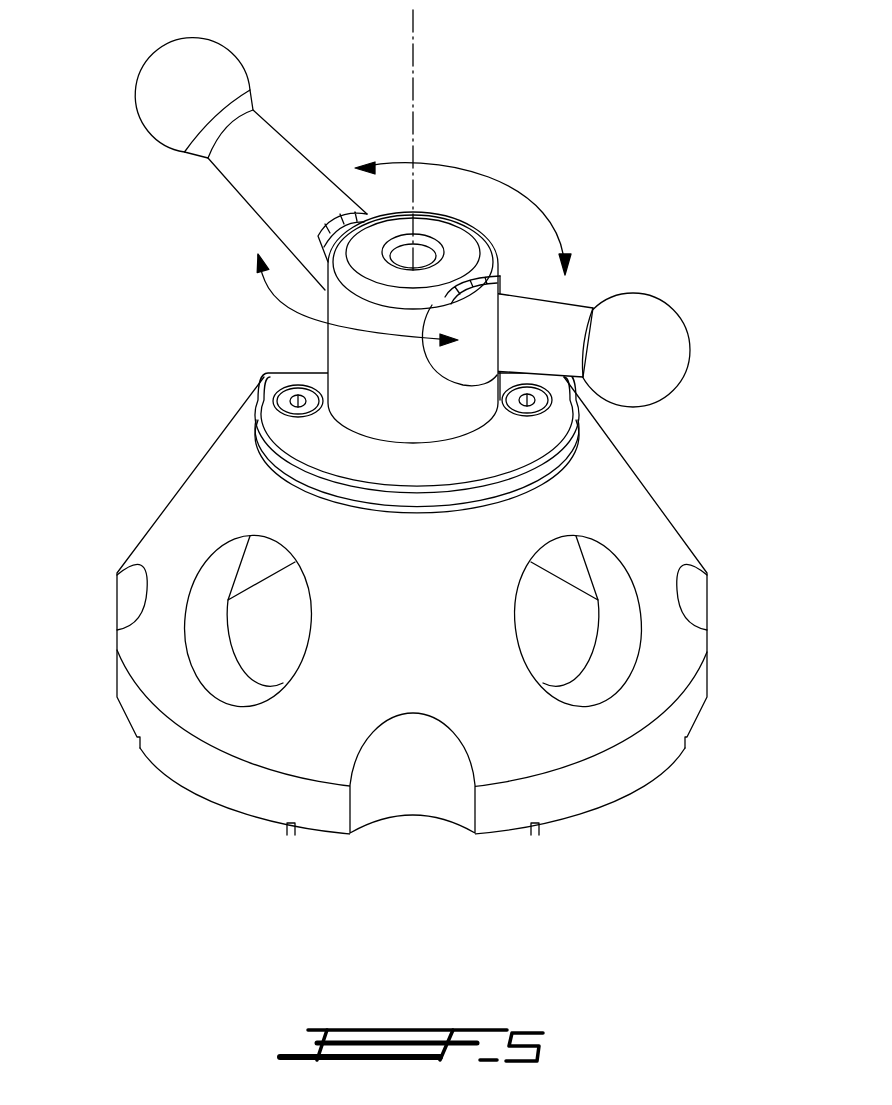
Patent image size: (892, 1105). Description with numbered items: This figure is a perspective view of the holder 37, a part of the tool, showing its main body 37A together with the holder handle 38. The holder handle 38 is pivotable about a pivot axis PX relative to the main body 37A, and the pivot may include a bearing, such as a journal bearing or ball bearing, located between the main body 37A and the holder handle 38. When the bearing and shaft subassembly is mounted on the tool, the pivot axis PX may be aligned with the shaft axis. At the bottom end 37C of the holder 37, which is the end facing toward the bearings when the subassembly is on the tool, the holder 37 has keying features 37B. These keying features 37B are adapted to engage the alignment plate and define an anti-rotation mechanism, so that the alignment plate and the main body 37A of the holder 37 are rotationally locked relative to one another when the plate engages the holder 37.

The holder 37 is at (436, 472).
The main body 37A is at (615, 483).
The keying features 37B is at (88, 620).
The bottom end 37C is at (193, 798).
The holder handle 38 is at (570, 312).
The pivot axis PX is at (413, 40).